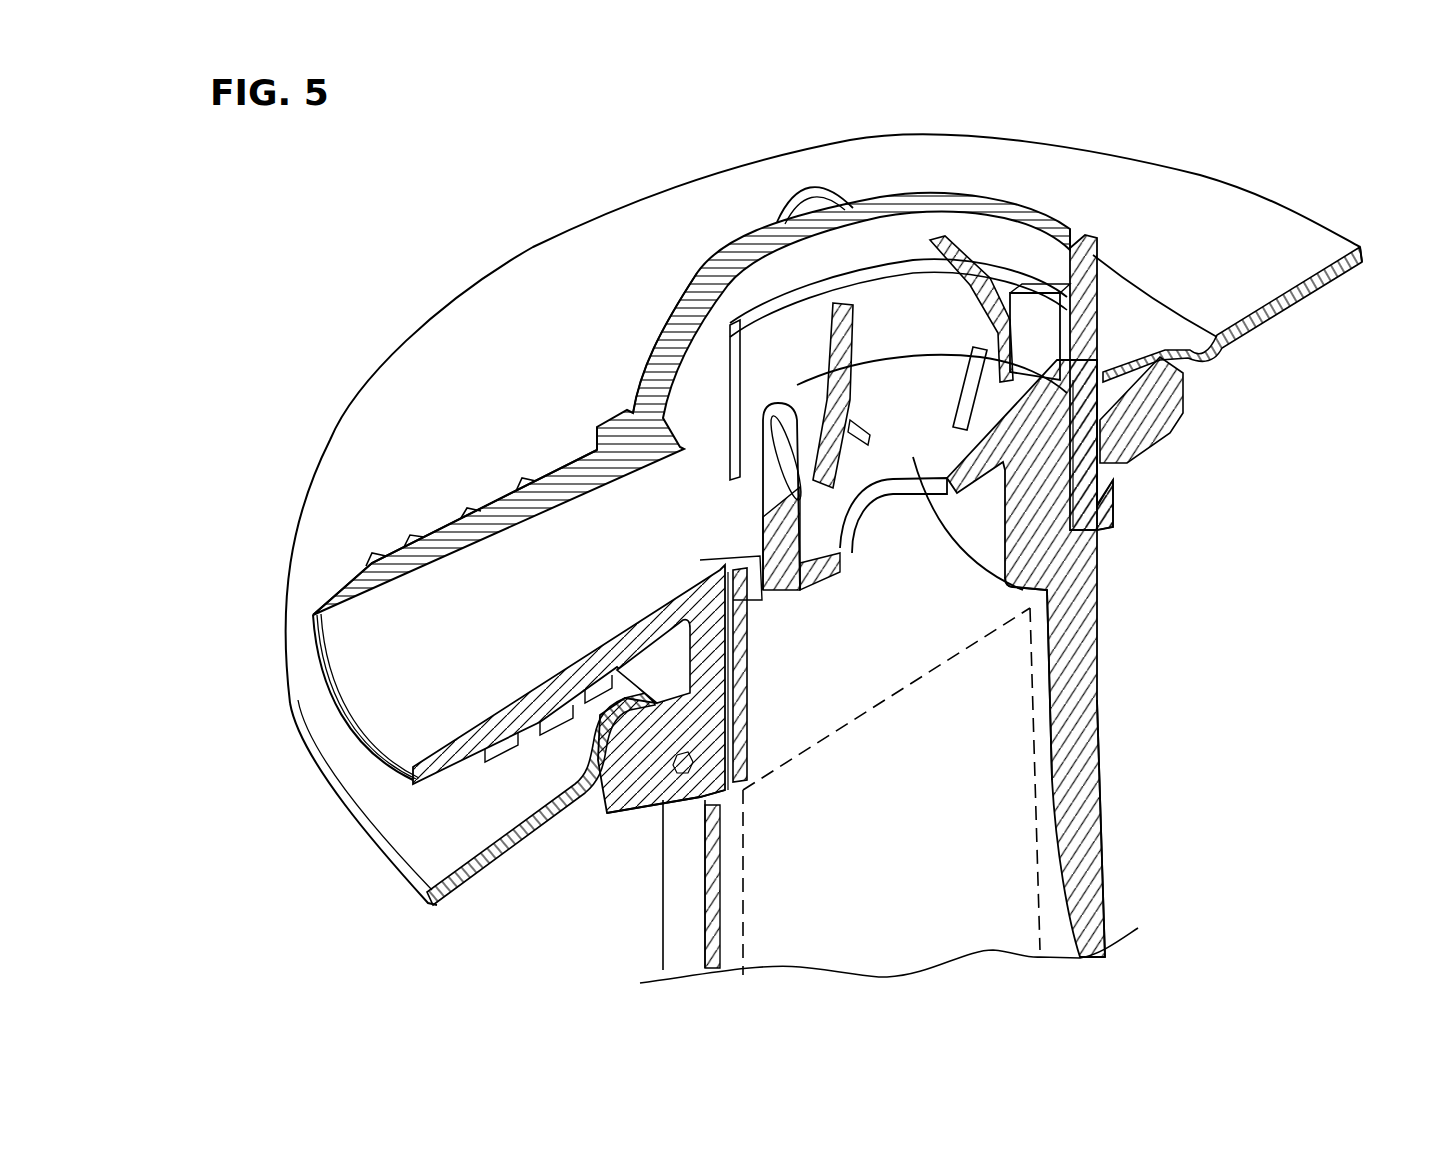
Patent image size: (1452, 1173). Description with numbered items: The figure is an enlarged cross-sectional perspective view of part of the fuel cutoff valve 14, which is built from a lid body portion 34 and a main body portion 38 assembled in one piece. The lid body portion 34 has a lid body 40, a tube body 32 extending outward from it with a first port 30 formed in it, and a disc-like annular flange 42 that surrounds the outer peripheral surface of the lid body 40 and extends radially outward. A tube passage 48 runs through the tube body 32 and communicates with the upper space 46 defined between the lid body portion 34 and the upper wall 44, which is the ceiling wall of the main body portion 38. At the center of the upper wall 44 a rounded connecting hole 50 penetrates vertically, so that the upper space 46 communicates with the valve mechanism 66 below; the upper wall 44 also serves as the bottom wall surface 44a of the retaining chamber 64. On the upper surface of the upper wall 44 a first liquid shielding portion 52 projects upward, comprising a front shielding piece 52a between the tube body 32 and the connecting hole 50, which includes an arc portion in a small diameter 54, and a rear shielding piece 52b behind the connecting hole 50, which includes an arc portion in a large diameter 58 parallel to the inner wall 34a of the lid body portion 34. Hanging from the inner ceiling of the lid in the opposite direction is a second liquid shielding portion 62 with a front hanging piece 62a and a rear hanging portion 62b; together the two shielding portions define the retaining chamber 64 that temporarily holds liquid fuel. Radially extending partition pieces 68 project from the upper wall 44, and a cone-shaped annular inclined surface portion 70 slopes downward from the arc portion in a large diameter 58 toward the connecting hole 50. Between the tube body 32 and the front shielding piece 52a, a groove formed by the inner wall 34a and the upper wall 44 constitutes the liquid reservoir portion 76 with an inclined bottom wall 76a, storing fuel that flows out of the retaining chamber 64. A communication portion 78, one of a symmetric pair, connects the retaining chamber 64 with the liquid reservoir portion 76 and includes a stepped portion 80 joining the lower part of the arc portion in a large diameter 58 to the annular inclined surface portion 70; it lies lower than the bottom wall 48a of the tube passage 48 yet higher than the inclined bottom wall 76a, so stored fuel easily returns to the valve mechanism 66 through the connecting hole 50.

The fuel cutoff valve 14 is at (1290, 172).
The first port 30 is at (382, 662).
The tube body 32 is at (437, 535).
The lid body portion 34 is at (1045, 195).
The inner wall of the lid body portion 34a is at (633, 793).
The main body portion 38 is at (1118, 858).
The lid body 40 is at (1088, 272).
The annular flange 42 is at (1362, 253).
The upper wall 44 is at (955, 440).
The bottom wall surface 44a is at (1027, 597).
The upper space 46 is at (923, 437).
The tube passage 48 is at (400, 565).
The bottom wall of the tube passage 48a is at (680, 566).
The connecting hole 50 is at (900, 497).
The first liquid shielding portion 52 is at (672, 365).
The front shielding piece 52a is at (688, 383).
The rear shielding piece 52b is at (1043, 270).
The arc portion in a small diameter 54 is at (803, 540).
The arc portion in a large diameter 58 is at (897, 267).
The second liquid shielding portion 62 is at (760, 365).
The front hanging piece 62a is at (805, 335).
The rear hanging portion 62b is at (983, 257).
The retaining chamber 64 is at (923, 347).
The valve mechanism 66 is at (920, 867).
The partition piece 68 is at (1000, 385).
The annular inclined surface portion 70 is at (1085, 530).
The liquid reservoir portion 76 is at (735, 560).
The inclined bottom wall 76a is at (762, 590).
The communication portion 78 is at (753, 540).
The stepped portion 80 is at (747, 483).